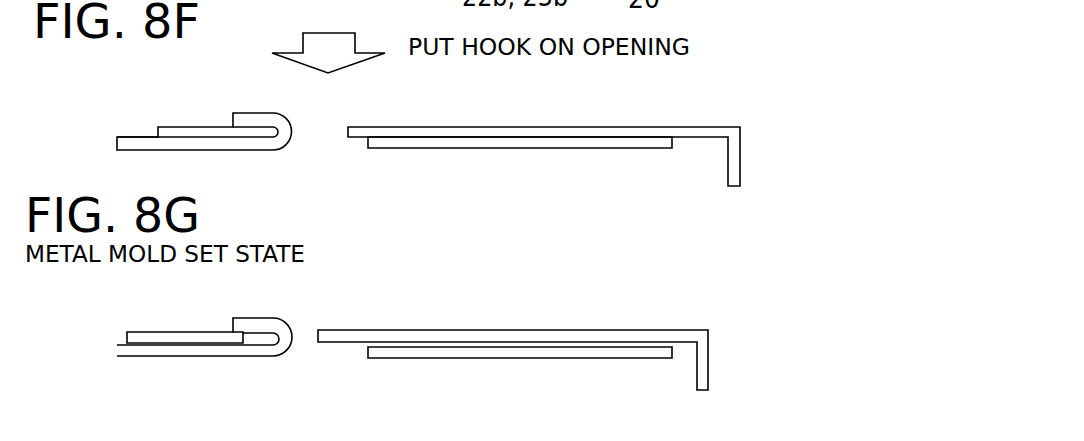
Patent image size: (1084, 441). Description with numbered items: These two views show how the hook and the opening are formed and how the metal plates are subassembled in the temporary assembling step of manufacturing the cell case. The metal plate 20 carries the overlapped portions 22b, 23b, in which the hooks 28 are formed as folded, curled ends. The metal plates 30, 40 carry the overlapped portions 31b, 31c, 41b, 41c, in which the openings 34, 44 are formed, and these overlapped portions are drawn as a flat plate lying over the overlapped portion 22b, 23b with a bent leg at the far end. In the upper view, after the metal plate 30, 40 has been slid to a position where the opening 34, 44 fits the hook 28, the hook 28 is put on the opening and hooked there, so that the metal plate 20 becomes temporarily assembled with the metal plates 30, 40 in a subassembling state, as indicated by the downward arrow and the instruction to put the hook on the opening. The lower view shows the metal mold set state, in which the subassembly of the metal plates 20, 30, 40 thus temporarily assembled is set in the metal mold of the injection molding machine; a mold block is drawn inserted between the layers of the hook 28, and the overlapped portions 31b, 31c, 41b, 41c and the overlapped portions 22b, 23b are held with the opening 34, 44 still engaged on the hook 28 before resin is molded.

In FIG. 8F, the metal plate 20 is at (520, 179).
In FIG. 8G, the metal plate 20 is at (520, 387).
In FIG. 8F, the overlapped portion 22b is at (520, 179).
In FIG. 8G, the overlapped portion 22b is at (520, 387).
In FIG. 8F, the overlapped portion 23b is at (533, 148).
In FIG. 8G, the overlapped portion 23b is at (527, 360).
In FIG. 8F, the hook 28 is at (237, 121).
In FIG. 8G, the hook 28 is at (234, 313).
In FIG. 8F, the metal plate 30 is at (574, 120).
In FIG. 8G, the metal plate 30 is at (538, 325).
In FIG. 8F, the metal plate 40 is at (574, 120).
In FIG. 8G, the metal plate 40 is at (538, 325).
In FIG. 8F, the overlapped portion 31b is at (574, 120).
In FIG. 8G, the overlapped portion 31b is at (538, 325).
In FIG. 8F, the overlapped portion 31c is at (574, 120).
In FIG. 8G, the overlapped portion 31c is at (538, 325).
In FIG. 8F, the overlapped portion 41b is at (574, 120).
In FIG. 8G, the overlapped portion 41b is at (538, 325).
In FIG. 8F, the overlapped portion 41c is at (482, 107).
In FIG. 8G, the overlapped portion 41c is at (480, 312).
In FIG. 8F, the opening 34 is at (237, 121).
In FIG. 8G, the opening 34 is at (234, 313).
In FIG. 8F, the opening 44 is at (244, 112).
In FIG. 8G, the opening 44 is at (308, 308).